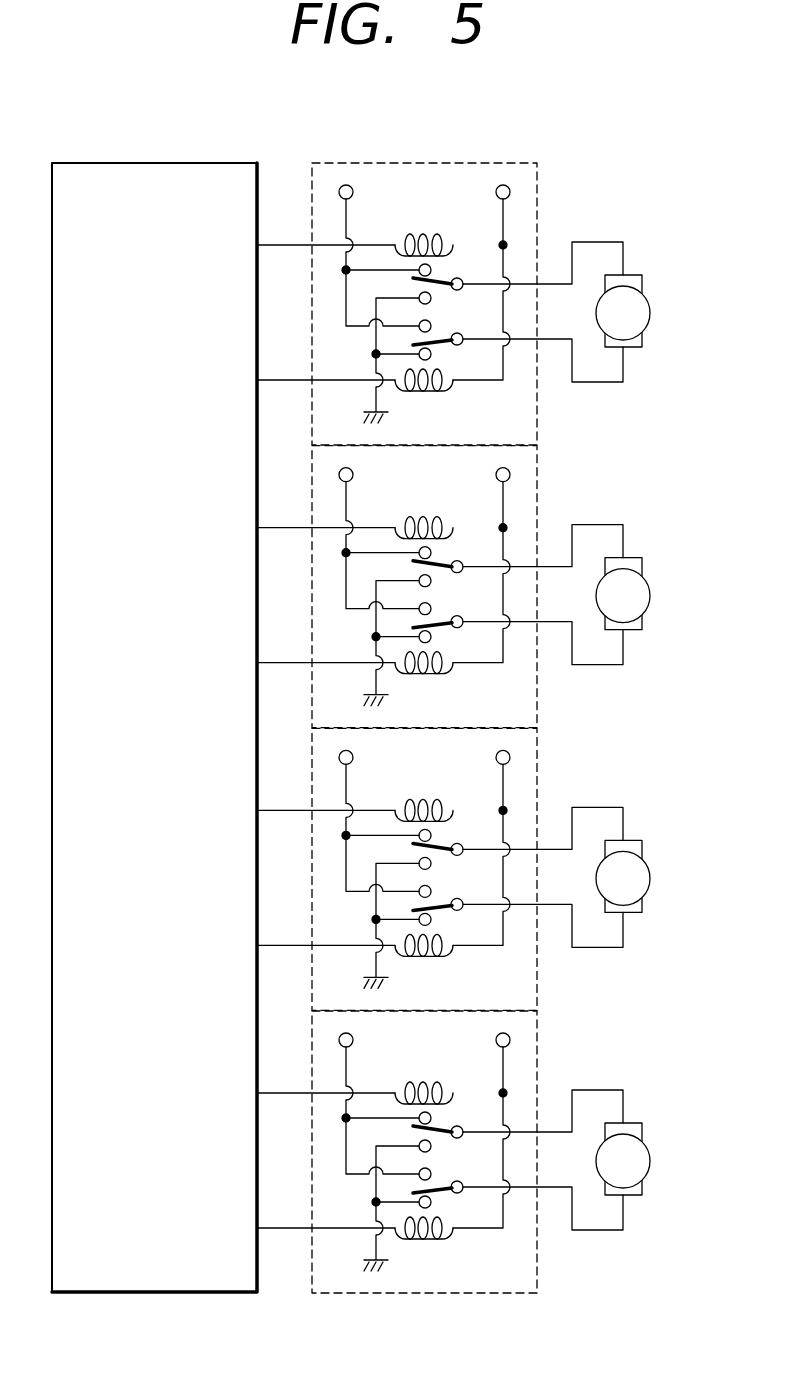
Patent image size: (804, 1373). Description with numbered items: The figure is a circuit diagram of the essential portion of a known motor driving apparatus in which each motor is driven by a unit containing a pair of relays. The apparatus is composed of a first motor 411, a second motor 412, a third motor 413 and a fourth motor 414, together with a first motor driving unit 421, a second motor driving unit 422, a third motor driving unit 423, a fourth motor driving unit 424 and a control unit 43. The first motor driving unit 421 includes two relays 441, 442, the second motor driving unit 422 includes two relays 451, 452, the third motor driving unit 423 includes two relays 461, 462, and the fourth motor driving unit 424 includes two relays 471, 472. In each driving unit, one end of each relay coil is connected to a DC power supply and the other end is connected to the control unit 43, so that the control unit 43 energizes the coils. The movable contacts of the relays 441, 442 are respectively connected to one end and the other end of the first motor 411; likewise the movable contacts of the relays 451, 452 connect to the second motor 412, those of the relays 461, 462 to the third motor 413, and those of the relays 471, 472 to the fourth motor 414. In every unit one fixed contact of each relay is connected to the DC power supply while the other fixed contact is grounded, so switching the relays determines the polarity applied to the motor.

The control unit 43 is at (198, 162).
The first motor driving unit 421 is at (427, 304).
The second motor driving unit 422 is at (427, 587).
The third motor driving unit 423 is at (427, 869).
The fourth motor driving unit 424 is at (427, 1152).
The relay 441 is at (438, 215).
The relay 442 is at (448, 410).
The relay 451 is at (438, 497).
The relay 452 is at (451, 688).
The relay 461 is at (438, 779).
The relay 462 is at (451, 970).
The relay 471 is at (438, 1062).
The relay 472 is at (451, 1253).
The first motor 411 is at (650, 305).
The second motor 412 is at (588, 595).
The third motor 413 is at (588, 877).
The fourth motor 414 is at (588, 1160).